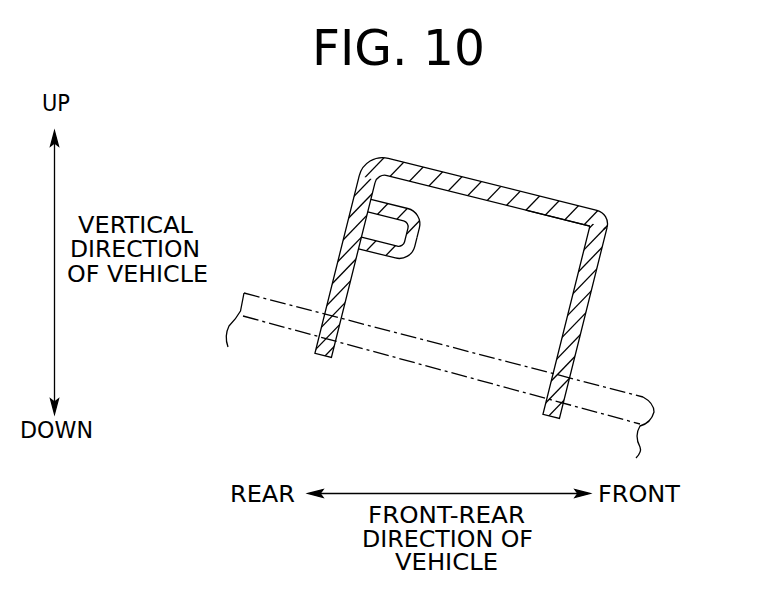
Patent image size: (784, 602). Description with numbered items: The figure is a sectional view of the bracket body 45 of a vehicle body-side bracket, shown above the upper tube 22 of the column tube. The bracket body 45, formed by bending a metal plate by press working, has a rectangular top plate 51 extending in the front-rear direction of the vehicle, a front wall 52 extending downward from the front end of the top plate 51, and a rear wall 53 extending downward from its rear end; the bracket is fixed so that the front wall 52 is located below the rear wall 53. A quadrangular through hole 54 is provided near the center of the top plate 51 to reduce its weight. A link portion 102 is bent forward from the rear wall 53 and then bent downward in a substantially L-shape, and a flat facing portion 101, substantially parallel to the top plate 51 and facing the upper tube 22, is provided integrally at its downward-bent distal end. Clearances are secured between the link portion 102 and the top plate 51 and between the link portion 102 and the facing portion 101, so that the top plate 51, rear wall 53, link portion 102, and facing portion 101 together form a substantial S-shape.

The upper tube 22 is at (444, 345).
The bracket body 45 is at (686, 201).
The top plate 51 is at (438, 170).
The front wall 52 is at (594, 277).
The rear wall 53 is at (360, 188).
The through hole 54 is at (548, 214).
The facing portion 101 is at (372, 261).
The link portion 102 is at (414, 221).